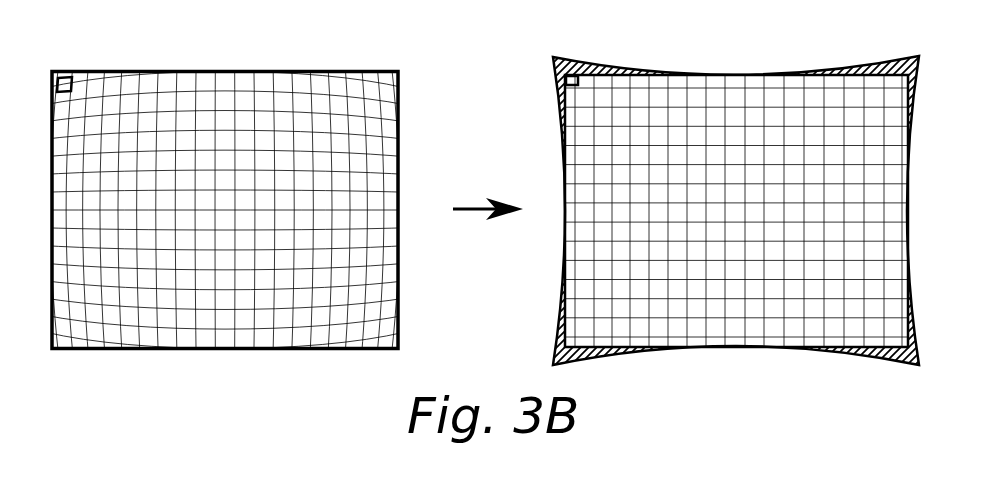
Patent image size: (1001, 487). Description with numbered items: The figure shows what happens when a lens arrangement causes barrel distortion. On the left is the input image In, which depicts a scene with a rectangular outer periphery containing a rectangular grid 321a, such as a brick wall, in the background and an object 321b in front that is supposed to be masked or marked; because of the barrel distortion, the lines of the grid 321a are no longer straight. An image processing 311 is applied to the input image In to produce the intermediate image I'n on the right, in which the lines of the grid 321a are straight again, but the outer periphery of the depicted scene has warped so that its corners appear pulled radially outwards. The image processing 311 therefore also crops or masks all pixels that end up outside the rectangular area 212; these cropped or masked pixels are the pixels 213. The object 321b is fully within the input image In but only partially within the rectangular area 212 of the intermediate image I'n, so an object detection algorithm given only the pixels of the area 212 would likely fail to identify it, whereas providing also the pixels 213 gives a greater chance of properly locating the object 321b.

The input image In is at (230, 78).
The intermediate image I'n is at (736, 187).
The rectangular grid 321a is at (332, 85).
The object 321b is at (66, 79).
The rectangular area 212 is at (770, 84).
The pixels 213 is at (905, 362).
The image processing 311 is at (468, 211).